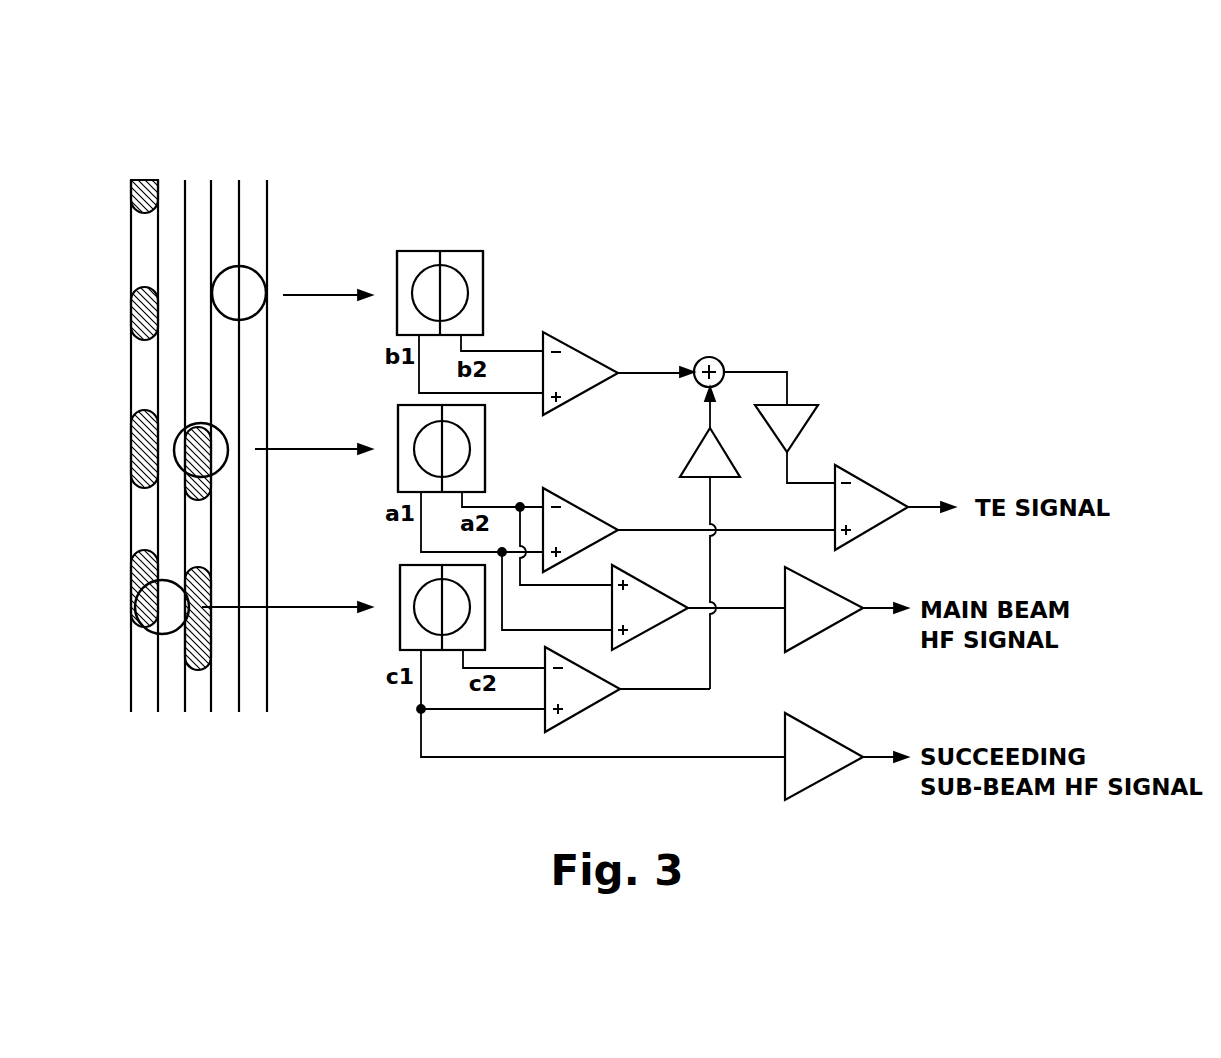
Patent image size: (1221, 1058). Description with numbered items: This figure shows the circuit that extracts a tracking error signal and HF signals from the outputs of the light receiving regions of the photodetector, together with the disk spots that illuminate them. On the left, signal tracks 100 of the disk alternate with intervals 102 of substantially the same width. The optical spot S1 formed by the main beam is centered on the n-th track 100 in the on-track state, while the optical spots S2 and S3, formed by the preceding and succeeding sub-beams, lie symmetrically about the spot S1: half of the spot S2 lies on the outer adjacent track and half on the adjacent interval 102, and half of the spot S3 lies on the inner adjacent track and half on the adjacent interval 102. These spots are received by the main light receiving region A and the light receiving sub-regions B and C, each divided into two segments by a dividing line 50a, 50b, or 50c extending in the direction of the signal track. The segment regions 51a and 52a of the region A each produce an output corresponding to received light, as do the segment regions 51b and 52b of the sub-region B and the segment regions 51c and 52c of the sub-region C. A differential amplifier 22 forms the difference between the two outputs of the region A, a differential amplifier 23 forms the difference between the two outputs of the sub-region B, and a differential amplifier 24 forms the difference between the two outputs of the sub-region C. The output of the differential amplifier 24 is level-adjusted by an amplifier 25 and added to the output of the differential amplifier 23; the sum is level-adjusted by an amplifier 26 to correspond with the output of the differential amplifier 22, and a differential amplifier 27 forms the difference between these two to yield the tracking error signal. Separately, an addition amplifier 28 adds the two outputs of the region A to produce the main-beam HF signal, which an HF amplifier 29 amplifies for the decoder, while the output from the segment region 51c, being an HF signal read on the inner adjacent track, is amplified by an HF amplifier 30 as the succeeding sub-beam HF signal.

The signal track 100 is at (126, 172).
The interval between adjacent tracks 102 is at (168, 167).
The optical spot S1 is at (222, 433).
The optical spot S2 is at (259, 273).
The optical spot S3 is at (148, 630).
The main light receiving region A is at (444, 435).
The light receiving sub-region B is at (450, 262).
The light receiving sub-region C is at (437, 596).
The dividing line 50a is at (431, 410).
The dividing line 50b is at (450, 252).
The dividing line 50c is at (431, 570).
The segment region 51a is at (410, 425).
The segment region 51b is at (408, 256).
The segment region 51c is at (410, 583).
The segment region 52a is at (478, 430).
The segment region 52b is at (476, 270).
The segment region 52c is at (478, 632).
The differential amplifier 22 is at (585, 505).
The differential amplifier 23 is at (583, 352).
The differential amplifier 24 is at (592, 705).
The amplifier 25 is at (694, 452).
The amplifier 26 is at (805, 428).
The differential amplifier 27 is at (882, 492).
The addition amplifier 28 is at (648, 580).
The HF amplifier 29 is at (830, 628).
The HF amplifier 30 is at (830, 775).